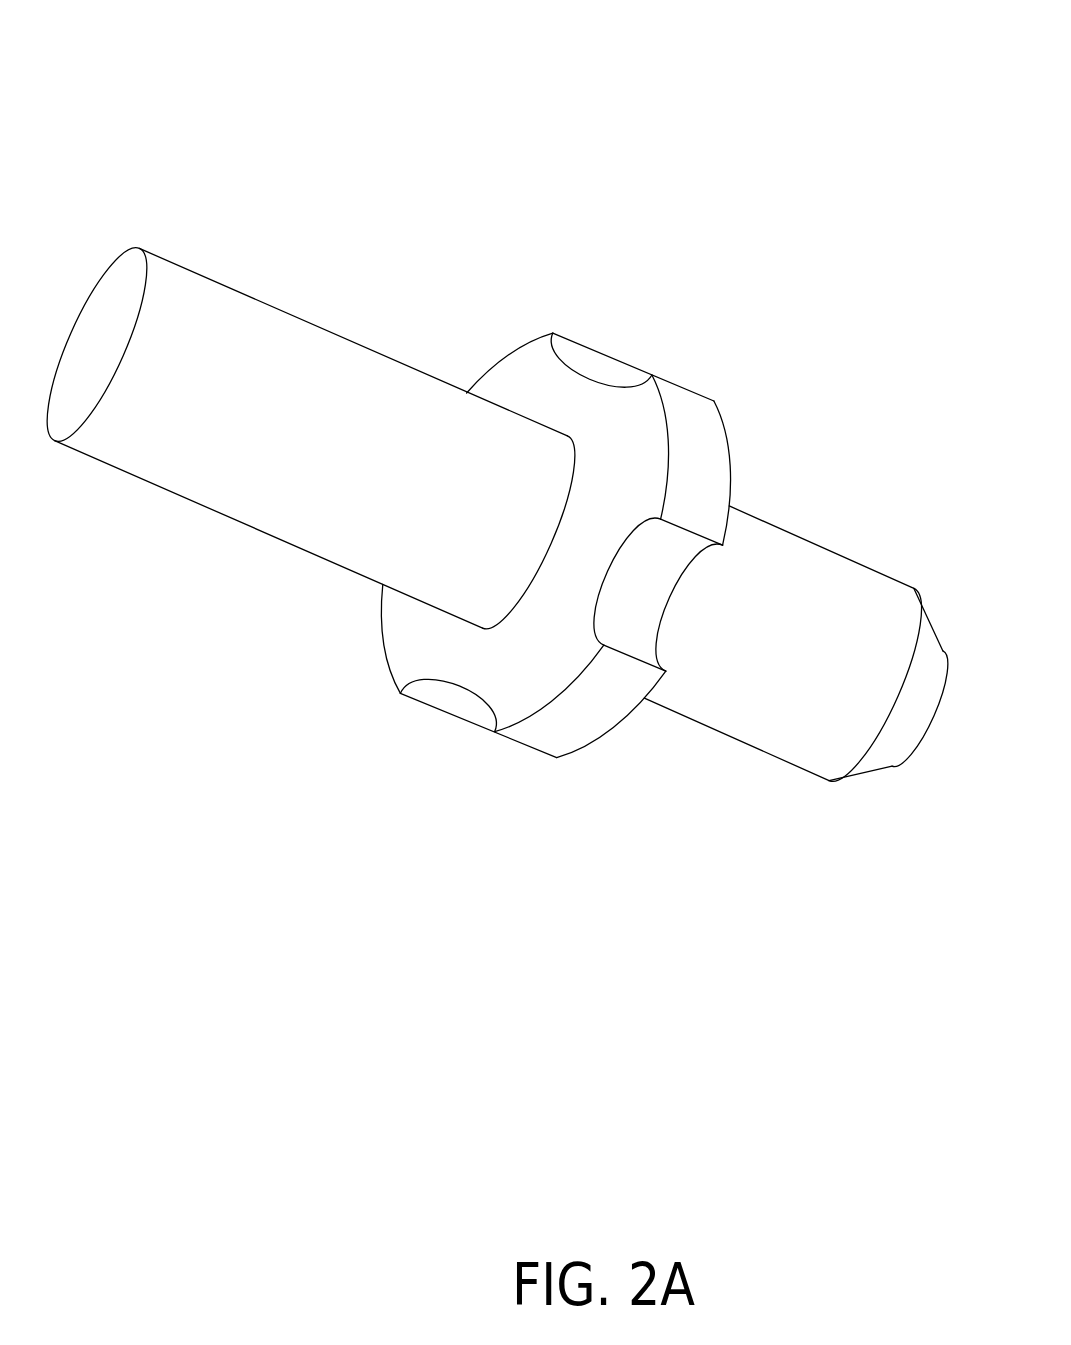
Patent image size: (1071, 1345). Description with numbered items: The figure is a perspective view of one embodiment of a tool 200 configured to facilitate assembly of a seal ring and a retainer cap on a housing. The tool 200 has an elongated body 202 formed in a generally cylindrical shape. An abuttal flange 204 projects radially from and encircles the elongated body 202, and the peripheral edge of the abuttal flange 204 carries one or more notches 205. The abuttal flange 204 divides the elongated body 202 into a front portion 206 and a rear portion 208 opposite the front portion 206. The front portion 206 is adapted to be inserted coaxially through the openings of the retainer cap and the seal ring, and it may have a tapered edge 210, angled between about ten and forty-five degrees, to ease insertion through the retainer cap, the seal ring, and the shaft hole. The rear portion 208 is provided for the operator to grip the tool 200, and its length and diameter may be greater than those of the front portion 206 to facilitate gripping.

The tool 200 is at (439, 150).
The elongated body 202 is at (300, 606).
The abuttal flange 204 is at (383, 658).
The notches 205 is at (652, 326).
The front portion 206 is at (858, 565).
The rear portion 208 is at (343, 333).
The tapered edge 210 is at (862, 772).